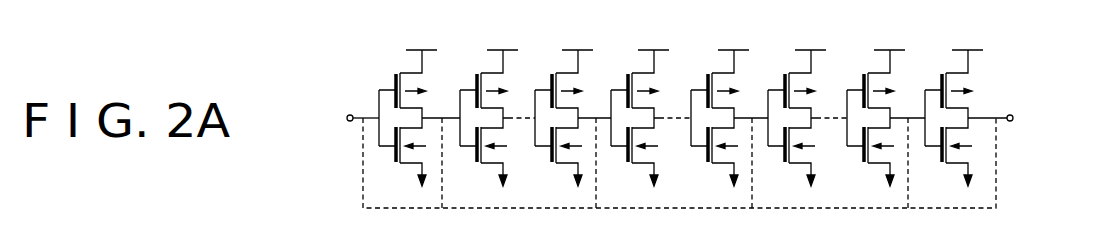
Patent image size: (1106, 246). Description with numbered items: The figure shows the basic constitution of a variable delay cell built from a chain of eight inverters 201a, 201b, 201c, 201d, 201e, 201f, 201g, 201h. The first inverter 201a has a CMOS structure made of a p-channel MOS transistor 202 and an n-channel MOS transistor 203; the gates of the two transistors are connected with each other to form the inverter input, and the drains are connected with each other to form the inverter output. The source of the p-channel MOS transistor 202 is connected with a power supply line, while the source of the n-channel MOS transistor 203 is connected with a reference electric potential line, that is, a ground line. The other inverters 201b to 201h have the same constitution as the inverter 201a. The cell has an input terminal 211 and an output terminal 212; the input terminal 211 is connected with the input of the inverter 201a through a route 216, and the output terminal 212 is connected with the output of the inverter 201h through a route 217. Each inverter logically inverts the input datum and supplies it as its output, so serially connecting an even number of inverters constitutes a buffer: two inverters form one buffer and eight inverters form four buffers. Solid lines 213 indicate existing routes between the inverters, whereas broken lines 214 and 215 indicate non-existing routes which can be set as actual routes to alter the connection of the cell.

The inverter 201a is at (360, 98).
The inverter 201b is at (479, 66).
The inverter 201c is at (554, 66).
The inverter 201d is at (630, 66).
The inverter 201e is at (710, 66).
The inverter 201f is at (787, 66).
The inverter 201g is at (866, 66).
The inverter 201h is at (944, 66).
The p-channel MOS transistor 202 is at (393, 74).
The n-channel MOS transistor 203 is at (394, 162).
The input terminal 211 is at (347, 118).
The output terminal 212 is at (1013, 118).
The solid line 213 is at (438, 117).
The broken line 214 is at (521, 117).
The broken line 215 is at (677, 209).
The route 216 is at (378, 100).
The route 217 is at (995, 117).